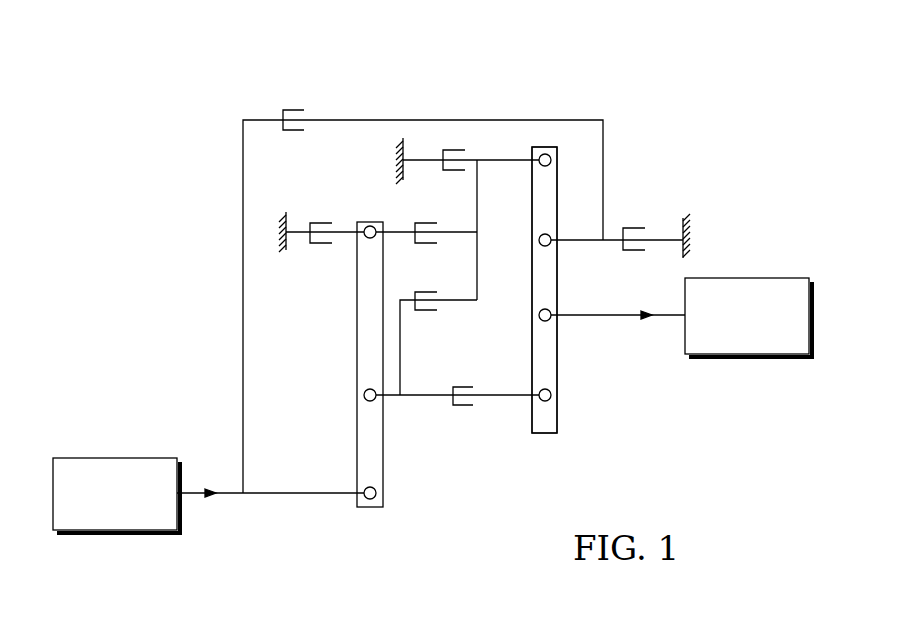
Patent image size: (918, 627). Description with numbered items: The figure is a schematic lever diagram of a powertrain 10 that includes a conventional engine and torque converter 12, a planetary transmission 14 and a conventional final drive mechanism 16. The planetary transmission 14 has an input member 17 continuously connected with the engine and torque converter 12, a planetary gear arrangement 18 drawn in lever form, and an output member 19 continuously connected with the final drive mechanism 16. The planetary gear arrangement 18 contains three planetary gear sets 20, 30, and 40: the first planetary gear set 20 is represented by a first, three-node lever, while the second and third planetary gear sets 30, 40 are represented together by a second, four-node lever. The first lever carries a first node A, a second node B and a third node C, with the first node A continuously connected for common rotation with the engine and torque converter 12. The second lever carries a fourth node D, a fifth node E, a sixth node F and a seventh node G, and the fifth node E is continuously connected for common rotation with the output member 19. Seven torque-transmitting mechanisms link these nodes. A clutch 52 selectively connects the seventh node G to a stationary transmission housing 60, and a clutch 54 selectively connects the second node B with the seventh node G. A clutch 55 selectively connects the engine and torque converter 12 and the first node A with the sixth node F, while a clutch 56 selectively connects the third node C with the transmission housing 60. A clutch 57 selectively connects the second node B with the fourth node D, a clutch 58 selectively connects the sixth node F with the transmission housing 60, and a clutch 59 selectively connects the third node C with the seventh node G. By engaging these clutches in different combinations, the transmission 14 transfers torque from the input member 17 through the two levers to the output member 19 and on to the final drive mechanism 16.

The powertrain 10 is at (637, 70).
The engine and torque converter 12 is at (107, 457).
The planetary transmission 14 is at (450, 90).
The final drive mechanism 16 is at (775, 277).
The input member 17 is at (229, 496).
The planetary gear arrangement 18 is at (531, 90).
The output member 19 is at (616, 319).
The first planetary gear set 20 is at (366, 216).
The second planetary gear set 30 is at (551, 454).
The third planetary gear set 40 is at (544, 290).
The clutch 52 is at (463, 140).
The clutch 54 is at (428, 320).
The clutch 55 is at (290, 100).
The clutch 56 is at (320, 257).
The clutch 57 is at (466, 418).
The clutch 58 is at (641, 214).
The clutch 59 is at (428, 216).
The stationary transmission housing 60 is at (403, 137).
The first node A is at (377, 493).
The second node B is at (363, 394).
The third node C is at (368, 240).
The fourth node D is at (552, 395).
The fifth node E is at (543, 322).
The sixth node F is at (543, 247).
The seventh node G is at (543, 167).